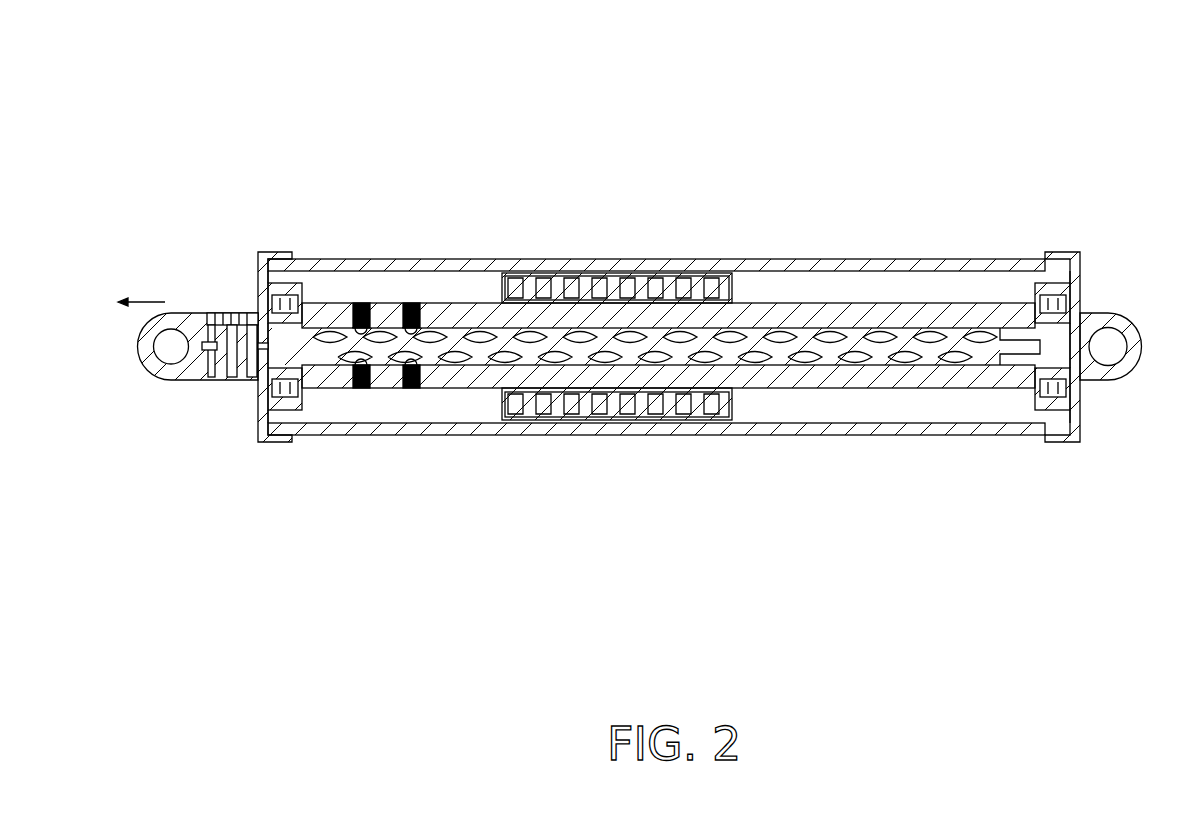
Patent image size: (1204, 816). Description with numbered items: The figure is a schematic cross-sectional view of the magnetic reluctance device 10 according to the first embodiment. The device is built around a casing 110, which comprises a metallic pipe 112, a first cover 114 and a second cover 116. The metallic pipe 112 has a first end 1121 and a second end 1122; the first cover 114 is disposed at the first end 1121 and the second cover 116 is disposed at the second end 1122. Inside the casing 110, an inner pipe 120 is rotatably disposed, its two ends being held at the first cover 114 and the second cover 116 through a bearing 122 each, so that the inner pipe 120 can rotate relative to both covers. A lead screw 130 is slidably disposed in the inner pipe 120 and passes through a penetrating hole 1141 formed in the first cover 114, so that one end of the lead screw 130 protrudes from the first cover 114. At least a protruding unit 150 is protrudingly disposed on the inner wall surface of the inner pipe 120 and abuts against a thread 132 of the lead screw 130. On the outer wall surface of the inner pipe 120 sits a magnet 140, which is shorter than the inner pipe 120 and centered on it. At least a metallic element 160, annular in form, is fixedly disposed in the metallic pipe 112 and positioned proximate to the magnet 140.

The magnetic reluctance device 10 is at (128, 61).
The casing 110 is at (842, 237).
The metallic pipe 112 is at (745, 264).
The first cover 114 is at (262, 413).
The second cover 116 is at (1080, 402).
The inner pipe 120 is at (788, 378).
The bearing 122 is at (260, 303).
The lead screw 130 is at (140, 357).
The thread 132 is at (447, 373).
The magnet 140 is at (625, 275).
The protruding unit 150 is at (387, 372).
The metallic element 160 is at (563, 277).
The first end 1121 is at (303, 428).
The second end 1122 is at (1038, 432).
The penetrating hole 1141 is at (263, 383).